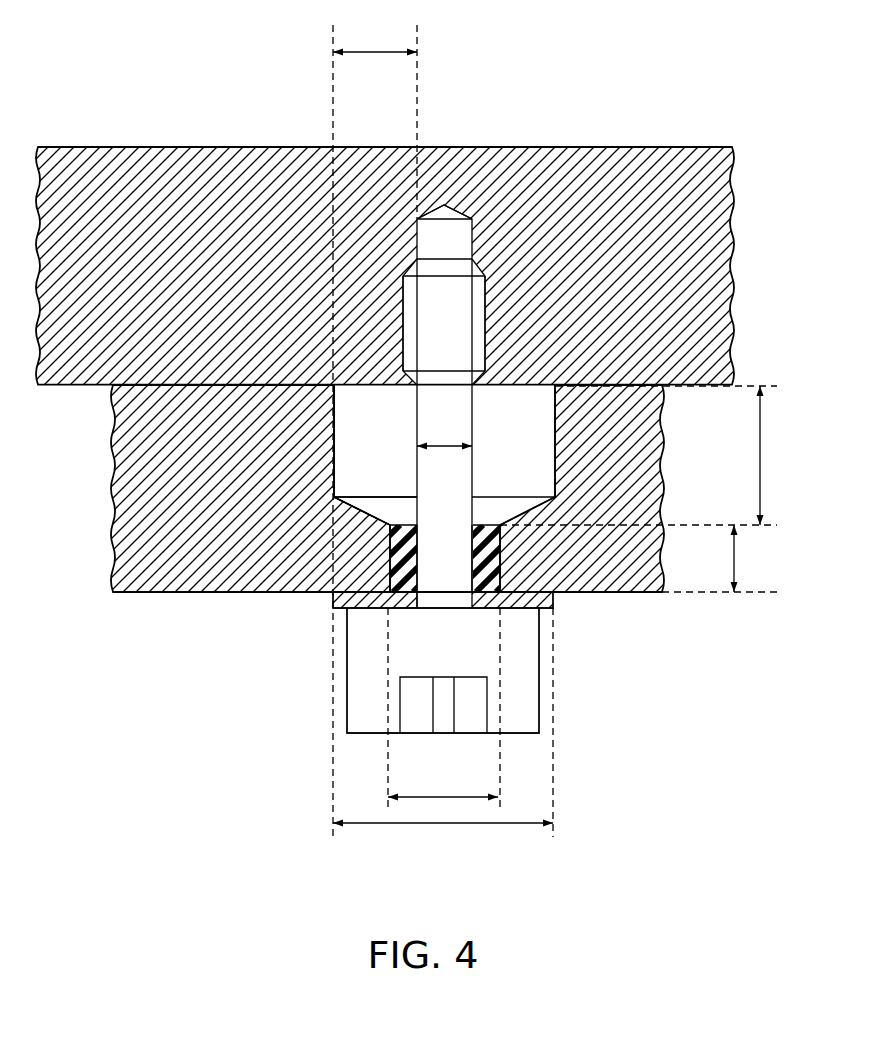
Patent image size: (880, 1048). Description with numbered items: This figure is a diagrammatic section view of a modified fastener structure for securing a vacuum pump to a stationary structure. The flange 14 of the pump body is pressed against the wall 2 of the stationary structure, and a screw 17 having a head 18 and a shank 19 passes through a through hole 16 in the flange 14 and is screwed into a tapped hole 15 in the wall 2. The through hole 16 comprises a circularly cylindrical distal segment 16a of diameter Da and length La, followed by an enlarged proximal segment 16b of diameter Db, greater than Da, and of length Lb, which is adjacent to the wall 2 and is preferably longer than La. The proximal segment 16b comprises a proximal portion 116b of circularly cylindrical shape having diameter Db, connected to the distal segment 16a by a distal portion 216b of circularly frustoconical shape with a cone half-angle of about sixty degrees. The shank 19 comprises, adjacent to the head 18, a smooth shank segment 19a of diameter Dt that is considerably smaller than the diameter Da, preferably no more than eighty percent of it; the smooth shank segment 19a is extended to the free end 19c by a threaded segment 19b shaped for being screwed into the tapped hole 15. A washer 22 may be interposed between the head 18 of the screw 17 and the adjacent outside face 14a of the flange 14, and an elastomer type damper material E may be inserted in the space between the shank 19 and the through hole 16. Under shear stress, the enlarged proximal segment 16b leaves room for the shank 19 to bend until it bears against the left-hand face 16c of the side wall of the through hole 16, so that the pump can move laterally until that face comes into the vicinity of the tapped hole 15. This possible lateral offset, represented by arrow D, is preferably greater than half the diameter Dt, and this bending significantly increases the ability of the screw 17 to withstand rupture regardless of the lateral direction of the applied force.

The wall 2 is at (672, 158).
The flange 14 is at (612, 583).
The outside face of the flange 14a is at (664, 612).
The tapped hole 15 is at (445, 408).
The through hole 16 is at (408, 525).
The distal segment 16a is at (405, 578).
The proximal segment 16b is at (362, 480).
The left-hand face of the side wall 16c is at (332, 405).
The proximal portion 116b is at (357, 454).
The distal portion 216b is at (337, 578).
The screw 17 is at (548, 731).
The head 18 is at (527, 670).
The shank 19 is at (410, 292).
The smooth shank segment 19a is at (443, 580).
The threaded segment 19b is at (455, 300).
The free end 19c is at (453, 235).
The washer 22 is at (385, 607).
The damper material E is at (412, 615).
The displacement D is at (378, 52).
The diameter of the smooth shank segment Dt is at (447, 448).
The diameter of the distal segment Da is at (445, 796).
The diameter of the proximal segment Db is at (440, 826).
The length of the distal segment La is at (737, 562).
The length of the proximal segment Lb is at (762, 455).